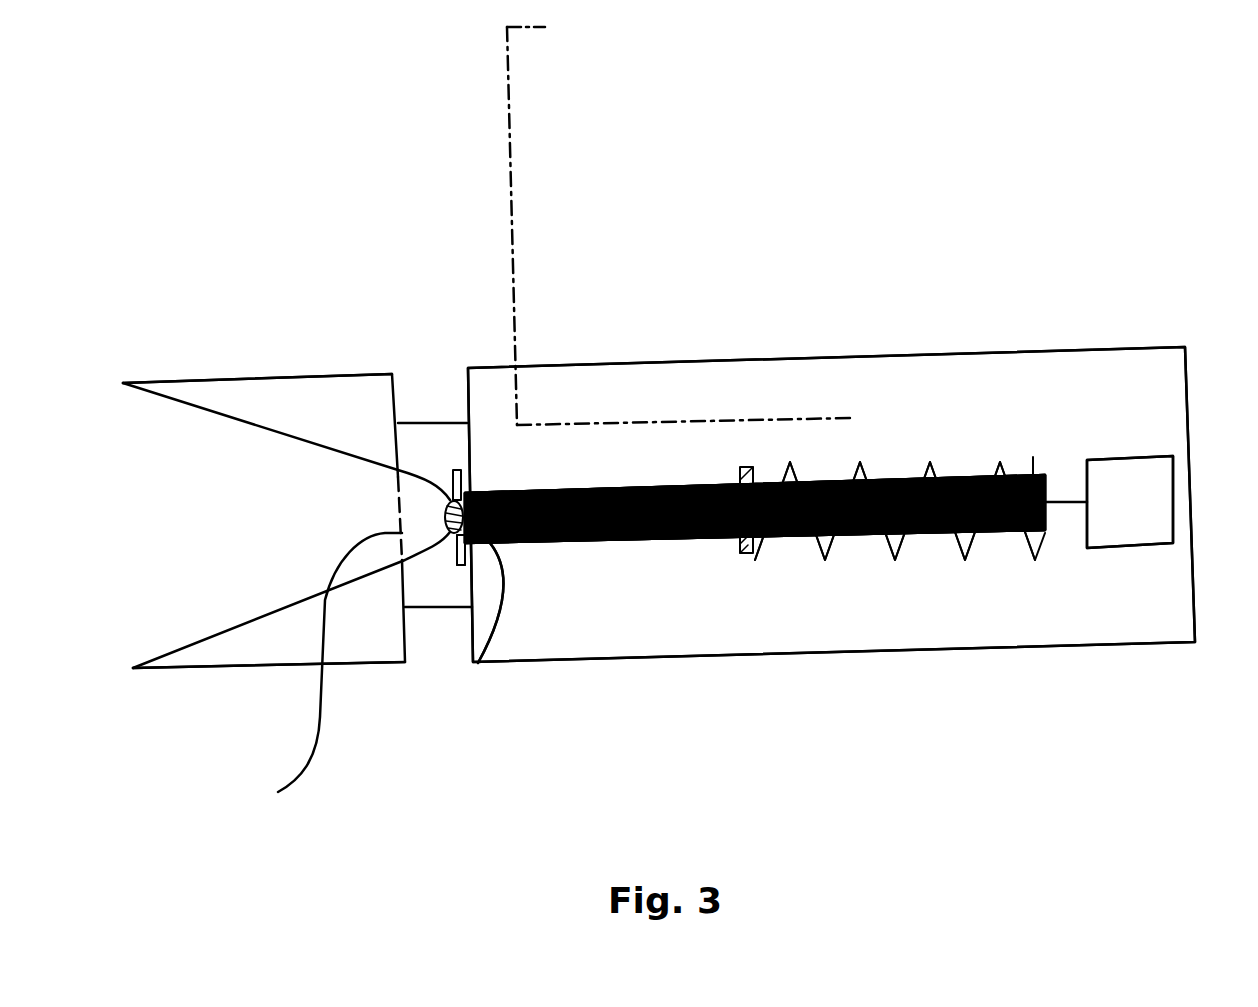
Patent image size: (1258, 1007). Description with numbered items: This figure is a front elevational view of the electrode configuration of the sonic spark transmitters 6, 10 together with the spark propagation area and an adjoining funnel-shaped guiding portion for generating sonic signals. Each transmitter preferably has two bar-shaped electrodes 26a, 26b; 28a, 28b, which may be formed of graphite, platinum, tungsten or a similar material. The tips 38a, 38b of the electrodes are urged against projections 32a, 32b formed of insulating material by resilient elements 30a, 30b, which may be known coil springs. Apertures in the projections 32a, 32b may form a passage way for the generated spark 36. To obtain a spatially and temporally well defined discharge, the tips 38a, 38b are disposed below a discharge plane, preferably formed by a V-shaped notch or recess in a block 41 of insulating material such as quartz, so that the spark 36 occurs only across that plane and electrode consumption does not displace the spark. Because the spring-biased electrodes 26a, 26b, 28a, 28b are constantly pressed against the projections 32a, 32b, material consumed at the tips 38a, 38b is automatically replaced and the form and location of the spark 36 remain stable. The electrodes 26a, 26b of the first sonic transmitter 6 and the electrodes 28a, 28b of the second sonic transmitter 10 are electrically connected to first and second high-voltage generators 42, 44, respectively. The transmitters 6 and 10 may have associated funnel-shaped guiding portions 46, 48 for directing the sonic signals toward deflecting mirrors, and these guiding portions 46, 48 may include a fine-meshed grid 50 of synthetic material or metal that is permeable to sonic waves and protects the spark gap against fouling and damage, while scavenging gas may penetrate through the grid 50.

The sonic spark transmitter 6 is at (812, 262).
The sonic spark transmitter 10 is at (812, 262).
The bar-shaped electrode 26a is at (645, 540).
The bar-shaped electrode 26b is at (820, 775).
The bar-shaped electrode 28a is at (820, 775).
The bar-shaped electrode 28b is at (820, 775).
The resilient element 30a is at (938, 470).
The resilient element 30b is at (938, 470).
The projection 32a is at (462, 475).
The projection 32b is at (462, 475).
The spark 36 is at (449, 501).
The electrode tip 38a is at (485, 655).
The electrode tip 38b is at (415, 785).
The block 41 is at (447, 440).
The high-voltage generator 42 is at (1135, 498).
The high-voltage generator 44 is at (1135, 498).
The funnel-shaped guiding portion 46 is at (307, 410).
The funnel-shaped guiding portion 48 is at (307, 410).
The fine-meshed grid 50 is at (327, 680).